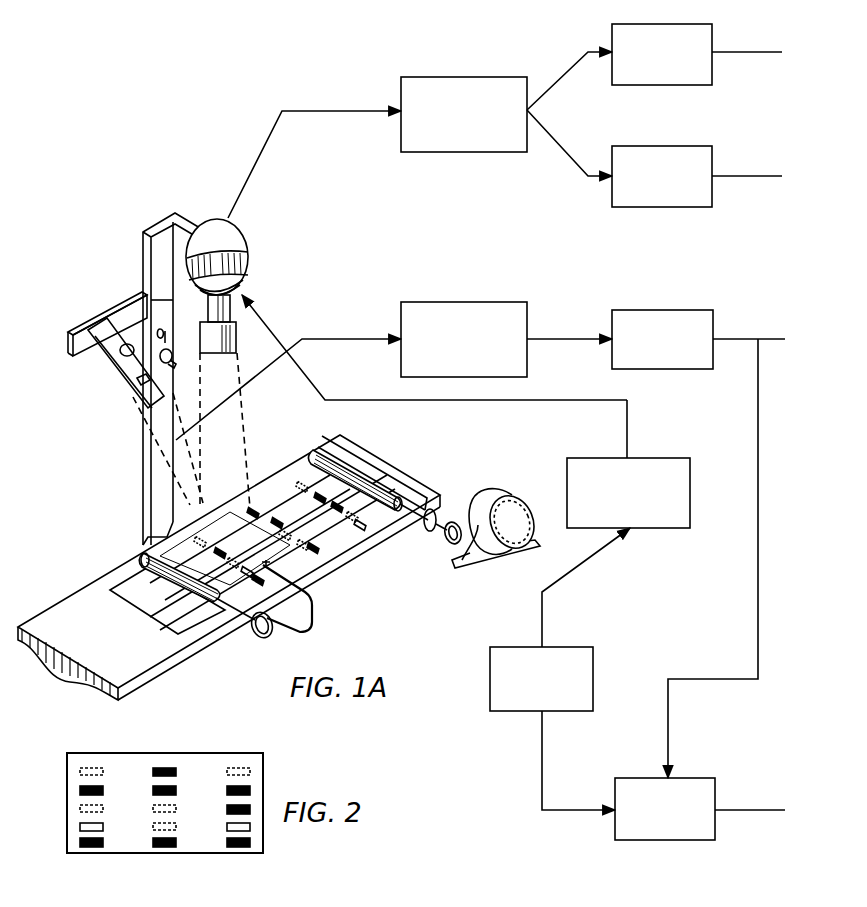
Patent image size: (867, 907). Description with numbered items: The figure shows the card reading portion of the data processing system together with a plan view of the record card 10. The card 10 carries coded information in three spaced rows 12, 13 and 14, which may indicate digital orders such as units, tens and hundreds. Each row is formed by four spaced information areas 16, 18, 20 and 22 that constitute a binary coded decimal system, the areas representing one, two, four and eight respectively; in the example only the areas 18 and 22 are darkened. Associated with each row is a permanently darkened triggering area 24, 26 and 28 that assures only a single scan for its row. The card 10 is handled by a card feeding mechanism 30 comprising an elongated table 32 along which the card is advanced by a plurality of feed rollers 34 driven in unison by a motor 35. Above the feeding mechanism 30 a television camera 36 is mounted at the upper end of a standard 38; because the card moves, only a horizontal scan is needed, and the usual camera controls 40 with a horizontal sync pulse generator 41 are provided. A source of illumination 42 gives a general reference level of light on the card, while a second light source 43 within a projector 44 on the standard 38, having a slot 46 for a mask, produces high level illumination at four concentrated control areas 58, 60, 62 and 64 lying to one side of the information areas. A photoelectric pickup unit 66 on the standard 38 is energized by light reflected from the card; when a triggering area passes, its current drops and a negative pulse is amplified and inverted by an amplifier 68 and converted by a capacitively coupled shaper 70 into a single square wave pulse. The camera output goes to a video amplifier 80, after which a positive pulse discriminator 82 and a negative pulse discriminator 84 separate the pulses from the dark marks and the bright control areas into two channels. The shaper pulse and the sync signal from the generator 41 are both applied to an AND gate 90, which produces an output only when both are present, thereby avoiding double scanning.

In FIG. 1A, the record card 10 is at (120, 593).
In FIG. 1A, the first row 12 is at (166, 527).
In FIG. 2, the first row 12 is at (90, 746).
In FIG. 1A, the second row 13 is at (248, 506).
In FIG. 2, the second row 13 is at (163, 746).
In FIG. 1A, the third row 14 is at (297, 478).
In FIG. 2, the third row 14 is at (242, 746).
In FIG. 1A, the information area 16 is at (178, 540).
In FIG. 2, the information area 16 is at (80, 771).
In FIG. 1A, the information area 18 is at (260, 513).
In FIG. 2, the information area 18 is at (80, 790).
In FIG. 1A, the information area 20 is at (251, 540).
In FIG. 2, the information area 20 is at (80, 809).
In FIG. 1A, the information area 22 is at (267, 550).
In FIG. 2, the information area 22 is at (80, 827).
In FIG. 1A, the permanently darkened triggering area 24 is at (231, 588).
In FIG. 2, the permanently darkened triggering area 24 is at (90, 847).
In FIG. 1A, the permanently darkened triggering area 26 is at (356, 522).
In FIG. 2, the permanently darkened triggering area 26 is at (168, 847).
In FIG. 1A, the permanently darkened triggering area 28 is at (364, 500).
In FIG. 2, the permanently darkened triggering area 28 is at (227, 842).
In FIG. 1A, the card feeding mechanism 30 is at (158, 682).
In FIG. 1A, the elongated table 32 is at (72, 662).
In FIG. 1A, the feed rollers 34 is at (145, 556).
In FIG. 1A, the motor 35 is at (474, 570).
In FIG. 1A, the television camera 36 is at (218, 220).
In FIG. 1A, the standard 38 is at (162, 466).
In FIG. 1A, the camera controls 40 is at (662, 462).
In FIG. 1A, the horizontal sync pulse generator 41 is at (570, 650).
In FIG. 1A, the source of illumination 42 is at (177, 366).
In FIG. 1A, the second light source 43 is at (122, 352).
In FIG. 1A, the projector 44 is at (108, 322).
In FIG. 1A, the slot 46 is at (138, 382).
In FIG. 1A, the control area 58 is at (227, 537).
In FIG. 1A, the control area 60 is at (189, 555).
In FIG. 1A, the control area 62 is at (267, 537).
In FIG. 1A, the control area 64 is at (289, 553).
In FIG. 1A, the photoelectric pickup unit 66 is at (300, 596).
In FIG. 1A, the amplifier 68 is at (468, 308).
In FIG. 1A, the shaper 70 is at (655, 312).
In FIG. 1A, the video amplifier 80 is at (466, 77).
In FIG. 1A, the positive pulse discriminator 82 is at (650, 25).
In FIG. 1A, the negative pulse discriminator 84 is at (655, 146).
In FIG. 1A, the AND gate 90 is at (687, 782).